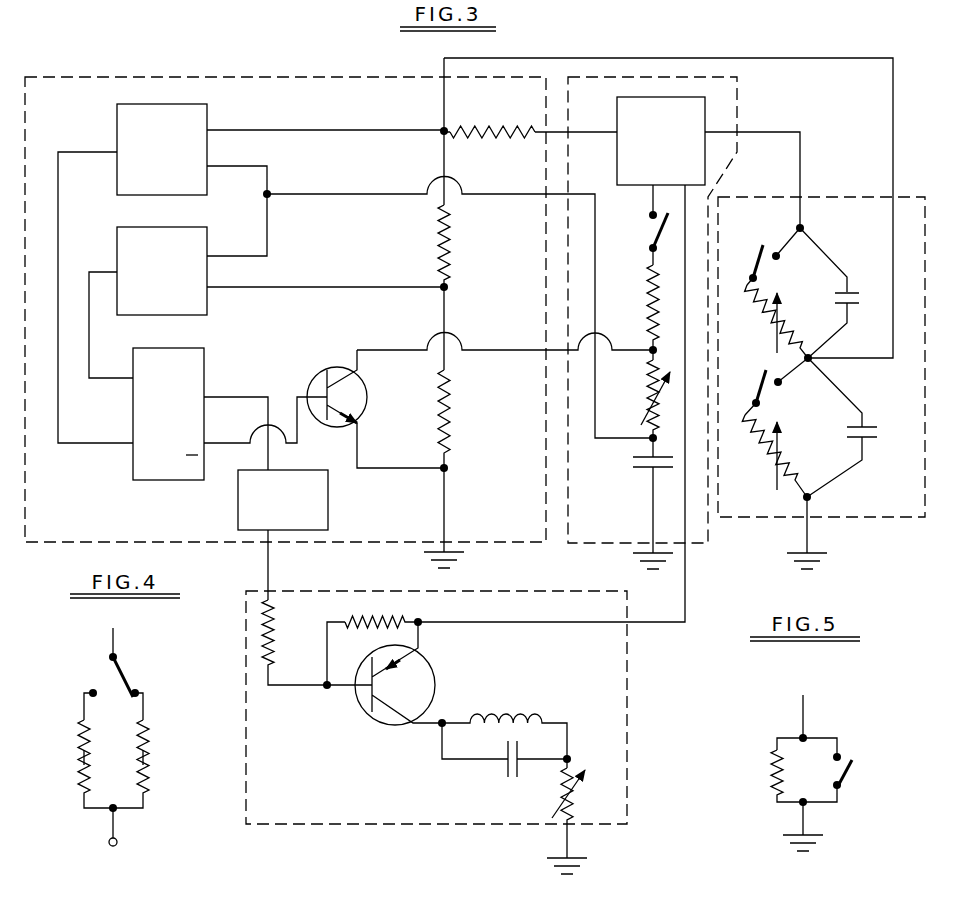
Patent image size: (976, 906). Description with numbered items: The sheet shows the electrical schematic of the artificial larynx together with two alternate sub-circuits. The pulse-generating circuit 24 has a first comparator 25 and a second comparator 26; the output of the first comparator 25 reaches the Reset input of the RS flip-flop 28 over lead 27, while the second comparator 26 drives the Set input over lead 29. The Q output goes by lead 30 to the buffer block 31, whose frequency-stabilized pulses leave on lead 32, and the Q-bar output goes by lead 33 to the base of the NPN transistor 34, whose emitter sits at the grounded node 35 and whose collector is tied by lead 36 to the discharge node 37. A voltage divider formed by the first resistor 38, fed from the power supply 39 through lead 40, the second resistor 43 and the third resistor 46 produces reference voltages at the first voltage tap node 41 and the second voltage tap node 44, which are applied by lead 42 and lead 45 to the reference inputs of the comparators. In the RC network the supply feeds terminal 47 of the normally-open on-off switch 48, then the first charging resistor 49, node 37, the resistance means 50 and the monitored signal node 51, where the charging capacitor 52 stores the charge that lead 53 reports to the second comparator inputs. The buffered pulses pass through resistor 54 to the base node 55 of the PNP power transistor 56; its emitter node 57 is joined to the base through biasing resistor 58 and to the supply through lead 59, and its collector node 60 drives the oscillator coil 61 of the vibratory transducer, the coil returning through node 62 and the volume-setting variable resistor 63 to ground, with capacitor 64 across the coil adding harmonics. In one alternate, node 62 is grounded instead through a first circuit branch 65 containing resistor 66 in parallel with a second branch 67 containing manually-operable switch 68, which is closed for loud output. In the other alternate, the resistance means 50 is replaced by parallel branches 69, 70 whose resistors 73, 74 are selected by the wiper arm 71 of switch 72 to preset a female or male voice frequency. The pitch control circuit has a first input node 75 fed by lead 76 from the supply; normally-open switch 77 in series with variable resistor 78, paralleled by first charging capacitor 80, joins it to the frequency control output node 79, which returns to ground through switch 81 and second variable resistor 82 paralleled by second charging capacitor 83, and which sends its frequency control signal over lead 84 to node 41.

In FIG. 3, the pulse-generating circuit 24 is at (222, 75).
In FIG. 3, the first comparator 25 is at (210, 118).
In FIG. 3, the second comparator 26 is at (210, 305).
In FIG. 3, the lead 27 is at (105, 444).
In FIG. 3, the RS flip-flop 28 is at (172, 482).
In FIG. 3, the lead 29 is at (91, 337).
In FIG. 3, the lead 30 is at (245, 397).
In FIG. 3, the buffer block 31 is at (328, 503).
In FIG. 3, the lead 32 is at (270, 568).
In FIG. 3, the lead 33 is at (232, 446).
In FIG. 3, the NPN transistor 34 is at (337, 365).
In FIG. 3, the grounded node 35 is at (452, 470).
In FIG. 3, the lead 36 is at (500, 350).
In FIG. 3, the discharge node 37 is at (650, 348).
In FIG. 4, the discharge node 37 is at (110, 656).
In FIG. 3, the first resistor 38 is at (492, 128).
In FIG. 3, the power supply 39 is at (705, 117).
In FIG. 3, the lead 40 is at (560, 132).
In FIG. 3, the first voltage tap node 41 is at (442, 129).
In FIG. 3, the lead 42 is at (342, 130).
In FIG. 3, the second voltage divider resistor 43 is at (452, 240).
In FIG. 3, the second voltage tap node 44 is at (450, 288).
In FIG. 3, the lead 45 is at (330, 287).
In FIG. 3, the third voltage divider resistor 46 is at (452, 404).
In FIG. 3, the switch terminal 47 is at (650, 215).
In FIG. 3, the normally-open switch 48 is at (657, 231).
In FIG. 3, the first charging resistor 49 is at (648, 298).
In FIG. 3, the resistance means 50 is at (650, 381).
In FIG. 3, the monitored signal node 51 is at (650, 437).
In FIG. 4, the monitored signal node 51 is at (118, 812).
In FIG. 3, the charging capacitor 52 is at (630, 468).
In FIG. 3, the lead 53 is at (355, 194).
In FIG. 3, the resistor 54 is at (262, 624).
In FIG. 3, the base node 55 is at (326, 690).
In FIG. 3, the PNP power transistor 56 is at (382, 742).
In FIG. 3, the emitter node 57 is at (425, 618).
In FIG. 3, the biasing resistor 58 is at (371, 616).
In FIG. 3, the lead 59 is at (688, 588).
In FIG. 3, the collector node 60 is at (446, 720).
In FIG. 3, the oscillator coil 61 is at (545, 712).
In FIG. 3, the node 62 is at (572, 758).
In FIG. 5, the node 62 is at (808, 736).
In FIG. 3, the variable resistor 63 is at (560, 792).
In FIG. 3, the capacitor 64 is at (503, 766).
In FIG. 5, the first circuit branch 65 is at (772, 735).
In FIG. 5, the resistor 66 is at (770, 770).
In FIG. 5, the second parallel branch 67 is at (845, 752).
In FIG. 5, the first manually-operable switch 68 is at (858, 772).
In FIG. 4, the first circuit branch 69 is at (72, 742).
In FIG. 4, the second branch 70 is at (160, 736).
In FIG. 4, the wiper arm 71 is at (124, 672).
In FIG. 4, the switch 72 is at (142, 688).
In FIG. 4, the resistor 73 is at (80, 760).
In FIG. 4, the second resistor 74 is at (152, 757).
In FIG. 3, the first input node 75 is at (810, 228).
In FIG. 3, the lead 76 is at (781, 131).
In FIG. 3, the first manually-operable normally-open switch 77 is at (756, 254).
In FIG. 3, the variable resistor 78 is at (772, 332).
In FIG. 3, the frequency control output node 79 is at (809, 350).
In FIG. 3, the first charging capacitor 80 is at (850, 290).
In FIG. 3, the second manually-operable normally-open switch 81 is at (760, 393).
In FIG. 3, the second variable resistor 82 is at (770, 460).
In FIG. 3, the second charging capacitor 83 is at (866, 426).
In FIG. 3, the lead 84 is at (838, 58).